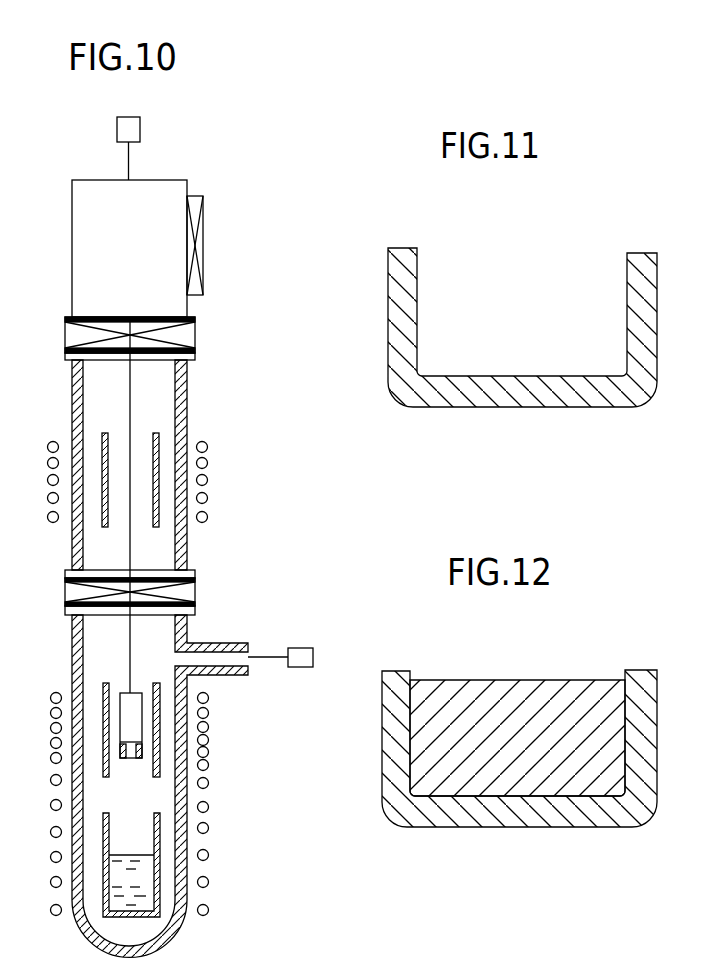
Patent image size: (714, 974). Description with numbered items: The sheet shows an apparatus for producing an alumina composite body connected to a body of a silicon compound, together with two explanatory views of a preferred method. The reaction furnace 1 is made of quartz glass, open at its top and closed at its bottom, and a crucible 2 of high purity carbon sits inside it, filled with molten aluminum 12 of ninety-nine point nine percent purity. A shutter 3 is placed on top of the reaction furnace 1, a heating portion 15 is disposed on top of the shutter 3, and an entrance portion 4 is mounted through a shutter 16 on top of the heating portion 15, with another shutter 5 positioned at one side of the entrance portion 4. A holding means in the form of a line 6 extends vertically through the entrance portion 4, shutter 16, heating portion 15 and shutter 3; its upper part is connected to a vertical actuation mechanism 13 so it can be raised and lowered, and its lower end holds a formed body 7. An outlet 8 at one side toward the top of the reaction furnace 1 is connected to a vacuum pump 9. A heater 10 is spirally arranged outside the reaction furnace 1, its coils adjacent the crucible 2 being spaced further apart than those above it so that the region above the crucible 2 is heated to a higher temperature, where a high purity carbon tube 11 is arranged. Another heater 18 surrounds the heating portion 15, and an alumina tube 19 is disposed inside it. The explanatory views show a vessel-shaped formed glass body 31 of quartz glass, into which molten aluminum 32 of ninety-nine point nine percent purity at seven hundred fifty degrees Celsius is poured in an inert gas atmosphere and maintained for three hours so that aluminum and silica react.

In FIG. 10, the reaction furnace 1 is at (188, 790).
In FIG. 10, the crucible 2 is at (160, 843).
In FIG. 10, the shutter 3 is at (187, 592).
In FIG. 10, the entrance portion 4 is at (72, 258).
In FIG. 10, the shutter 5 is at (203, 252).
In FIG. 10, the holding means 6 is at (130, 390).
In FIG. 10, the formed body 7 is at (133, 710).
In FIG. 10, the outlet 8 is at (215, 668).
In FIG. 10, the vacuum pump 9 is at (313, 657).
In FIG. 10, the heater 10 is at (208, 882).
In FIG. 10, the tube 11 is at (105, 682).
In FIG. 10, the molten aluminum 12 is at (140, 905).
In FIG. 10, the vertical actuation mechanism 13 is at (140, 128).
In FIG. 10, the heating portion 15 is at (187, 392).
In FIG. 10, the shutter 16 is at (195, 335).
In FIG. 10, the heater 18 is at (207, 500).
In FIG. 10, the alumina tube 19 is at (102, 515).
In FIG. 11, the formed glass body 31 is at (632, 262).
In FIG. 12, the formed glass body 31 is at (635, 677).
In FIG. 12, the molten aluminum 32 is at (517, 680).